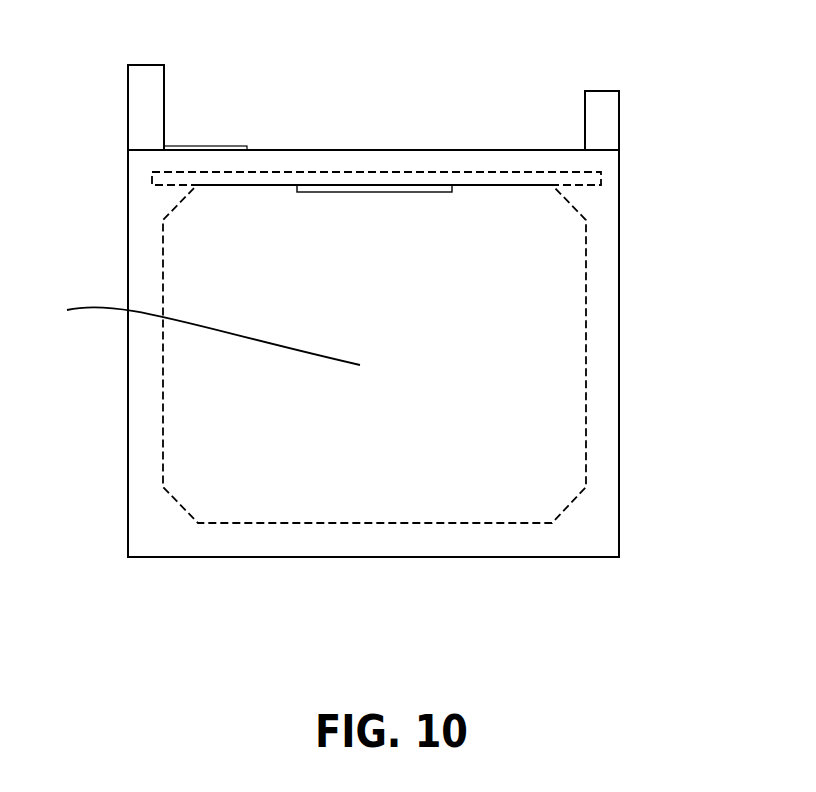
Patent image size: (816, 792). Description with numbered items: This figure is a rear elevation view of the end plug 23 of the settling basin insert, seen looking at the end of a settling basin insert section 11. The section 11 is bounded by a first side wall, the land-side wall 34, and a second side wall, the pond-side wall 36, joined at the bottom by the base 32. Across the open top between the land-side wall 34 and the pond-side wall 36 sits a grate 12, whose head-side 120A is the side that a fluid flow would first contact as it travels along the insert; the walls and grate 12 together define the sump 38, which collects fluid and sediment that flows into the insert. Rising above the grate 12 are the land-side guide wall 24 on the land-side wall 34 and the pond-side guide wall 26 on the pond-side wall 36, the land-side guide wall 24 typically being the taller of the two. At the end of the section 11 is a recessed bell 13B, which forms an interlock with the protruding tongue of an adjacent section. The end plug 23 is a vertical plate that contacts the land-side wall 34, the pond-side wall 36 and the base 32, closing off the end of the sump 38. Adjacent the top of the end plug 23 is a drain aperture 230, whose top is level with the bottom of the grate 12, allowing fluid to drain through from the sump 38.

The settling basin insert section 11 is at (685, 294).
The grate 12 is at (287, 151).
The head-side 120A is at (491, 157).
The recessed bell 13B is at (582, 176).
The end plug 23 is at (197, 330).
The land-side guide wall 24 is at (145, 64).
The pond-side guide wall 26 is at (598, 90).
The drain aperture 230 is at (390, 192).
The base 32 is at (268, 540).
The land-side wall 34 is at (140, 388).
The pond-side wall 36 is at (607, 390).
The sump 38 is at (530, 340).